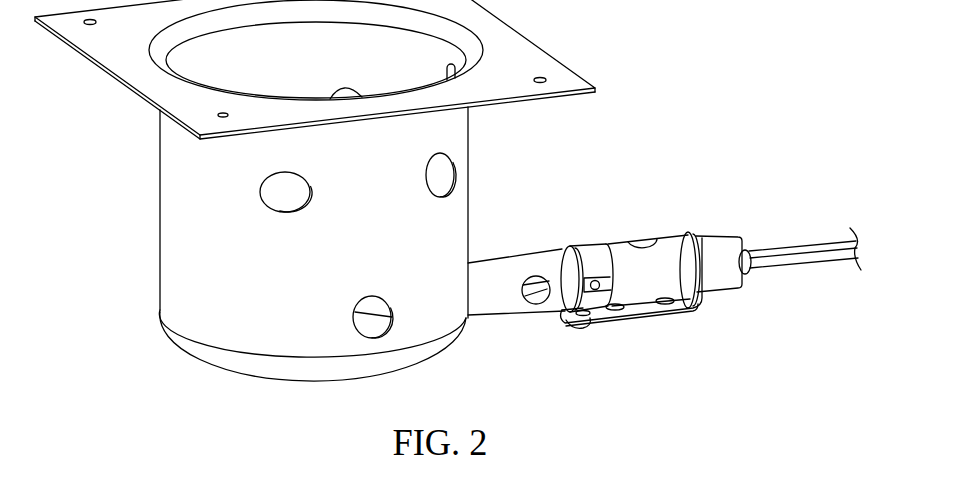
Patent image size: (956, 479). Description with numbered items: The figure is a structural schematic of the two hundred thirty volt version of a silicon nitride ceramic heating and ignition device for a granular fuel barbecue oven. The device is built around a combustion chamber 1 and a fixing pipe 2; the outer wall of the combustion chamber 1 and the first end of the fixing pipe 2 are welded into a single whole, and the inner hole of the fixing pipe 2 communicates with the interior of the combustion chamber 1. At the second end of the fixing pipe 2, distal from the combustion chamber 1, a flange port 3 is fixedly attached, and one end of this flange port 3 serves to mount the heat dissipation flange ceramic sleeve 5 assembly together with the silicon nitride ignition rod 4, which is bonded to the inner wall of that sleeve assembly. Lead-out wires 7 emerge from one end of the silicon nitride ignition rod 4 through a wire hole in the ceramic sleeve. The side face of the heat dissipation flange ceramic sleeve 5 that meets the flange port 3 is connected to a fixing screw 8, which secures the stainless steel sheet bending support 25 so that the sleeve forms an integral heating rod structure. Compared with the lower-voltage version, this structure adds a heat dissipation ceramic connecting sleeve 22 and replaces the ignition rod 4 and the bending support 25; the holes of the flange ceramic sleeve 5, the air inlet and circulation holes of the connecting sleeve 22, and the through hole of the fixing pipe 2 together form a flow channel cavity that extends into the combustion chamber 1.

The combustion chamber 1 is at (193, 248).
The fixing pipe 2 is at (517, 258).
The flange port 3 is at (582, 257).
The silicon nitride ignition rod 4 is at (545, 302).
The heat dissipation flange ceramic sleeve 5 is at (720, 250).
The lead-out wires 7 is at (787, 252).
The fixing screws 8 is at (583, 323).
The heat dissipation ceramic connecting sleeve 22 is at (618, 257).
The stainless steel sheet bending support 25 is at (657, 313).